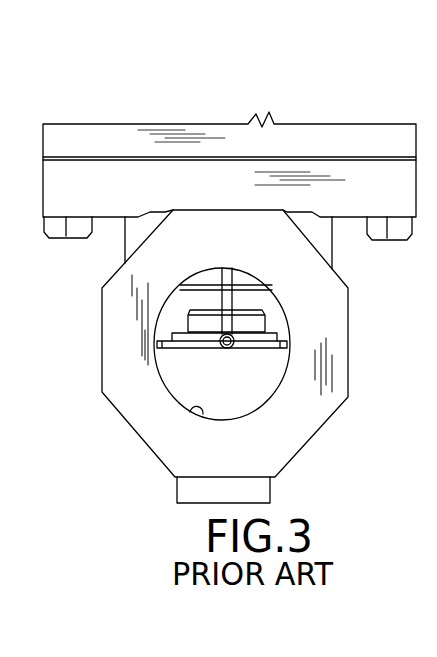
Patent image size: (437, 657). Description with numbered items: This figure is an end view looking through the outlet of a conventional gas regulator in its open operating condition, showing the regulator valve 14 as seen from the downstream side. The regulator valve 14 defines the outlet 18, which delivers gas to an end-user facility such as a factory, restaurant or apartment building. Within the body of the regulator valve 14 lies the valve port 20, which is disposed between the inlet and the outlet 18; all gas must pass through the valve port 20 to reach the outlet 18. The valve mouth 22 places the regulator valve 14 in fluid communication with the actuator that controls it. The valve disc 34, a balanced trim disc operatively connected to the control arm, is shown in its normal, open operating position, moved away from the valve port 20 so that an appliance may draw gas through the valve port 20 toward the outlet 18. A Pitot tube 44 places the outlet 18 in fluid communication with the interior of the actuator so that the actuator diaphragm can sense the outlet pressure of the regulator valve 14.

The regulator valve 14 is at (348, 386).
The outlet 18 is at (187, 412).
The valve port 20 is at (257, 323).
The valve mouth 22 is at (323, 235).
The valve disc 34 is at (187, 283).
The Pitot tube 44 is at (225, 320).